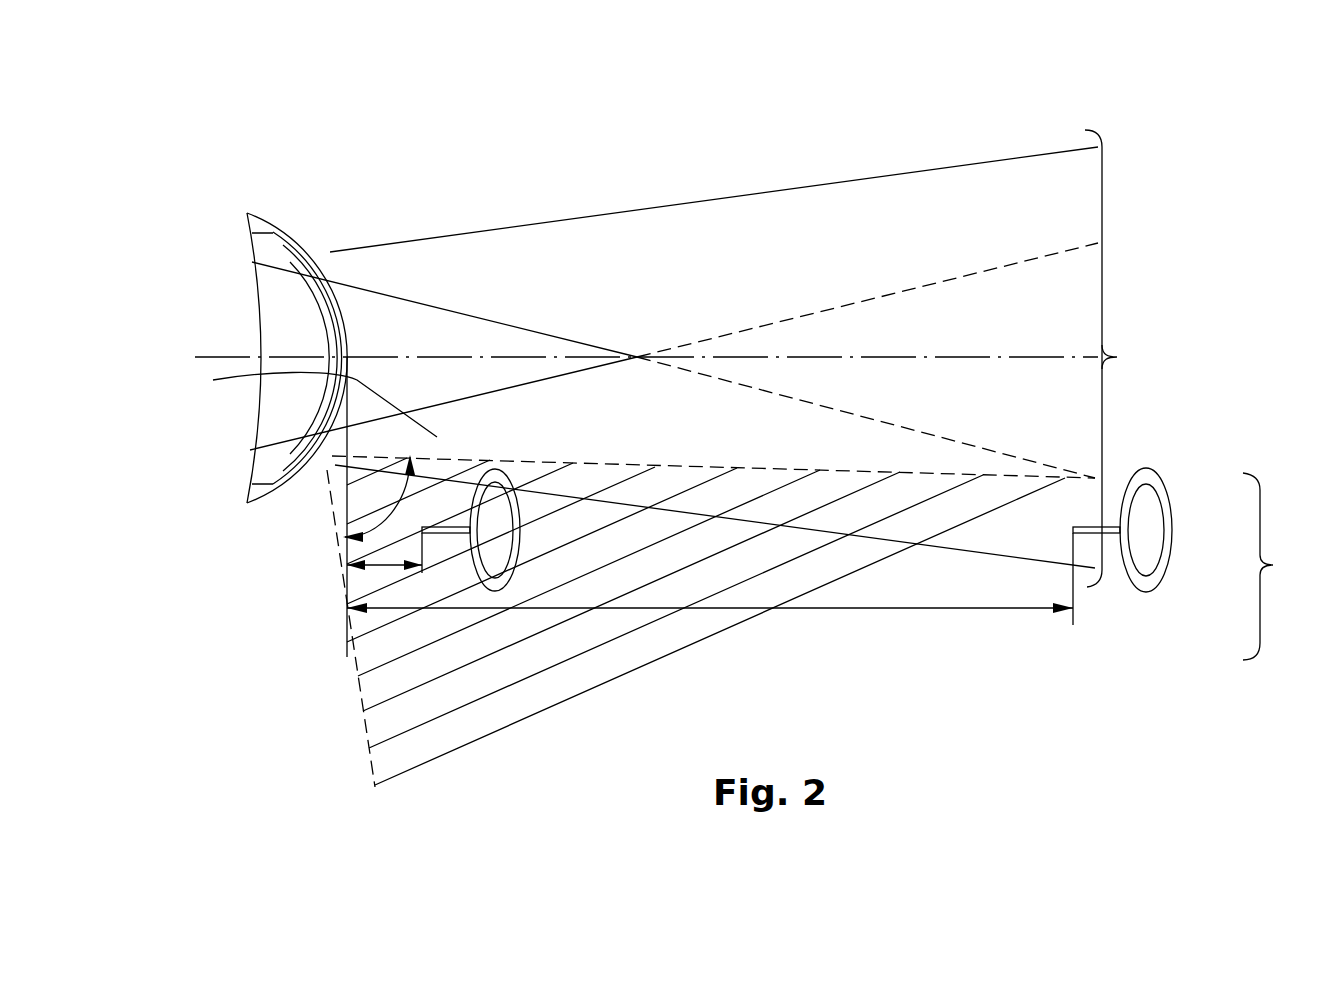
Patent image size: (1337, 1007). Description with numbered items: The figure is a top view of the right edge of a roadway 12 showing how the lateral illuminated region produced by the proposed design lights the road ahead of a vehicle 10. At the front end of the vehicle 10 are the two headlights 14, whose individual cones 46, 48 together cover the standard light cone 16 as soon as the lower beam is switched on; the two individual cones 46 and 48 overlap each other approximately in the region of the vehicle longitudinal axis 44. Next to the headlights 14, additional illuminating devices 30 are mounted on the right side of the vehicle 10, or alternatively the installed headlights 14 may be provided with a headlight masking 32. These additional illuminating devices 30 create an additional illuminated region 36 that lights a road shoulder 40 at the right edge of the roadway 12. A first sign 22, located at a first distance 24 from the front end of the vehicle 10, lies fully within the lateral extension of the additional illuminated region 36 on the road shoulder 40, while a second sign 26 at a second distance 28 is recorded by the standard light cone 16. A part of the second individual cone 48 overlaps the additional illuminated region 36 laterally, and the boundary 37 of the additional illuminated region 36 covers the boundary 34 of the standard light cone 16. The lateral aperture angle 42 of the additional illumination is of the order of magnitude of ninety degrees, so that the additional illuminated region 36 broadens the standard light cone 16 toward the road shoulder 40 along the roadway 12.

The vehicle 10 is at (246, 195).
The roadway 12 is at (1035, 318).
The headlights 14 is at (320, 270).
The standard light cone 16 is at (673, 357).
The first sign 22 is at (497, 490).
The first distance 24 is at (345, 572).
The second sign 26 is at (1145, 565).
The second distance 28 is at (815, 612).
The additional illuminating devices 30 is at (330, 463).
The headlight masking 32 is at (309, 358).
The boundary of standard light cone 34 is at (693, 512).
The additional illuminated region 36 is at (553, 648).
The boundary of additional illuminated region 37 is at (602, 463).
The road shoulder 40 is at (1277, 566).
The lateral aperture angle 42 is at (377, 517).
The vehicle longitudinal axis 44 is at (243, 340).
The first individual cone 46 is at (727, 232).
The second individual cone 48 is at (307, 401).